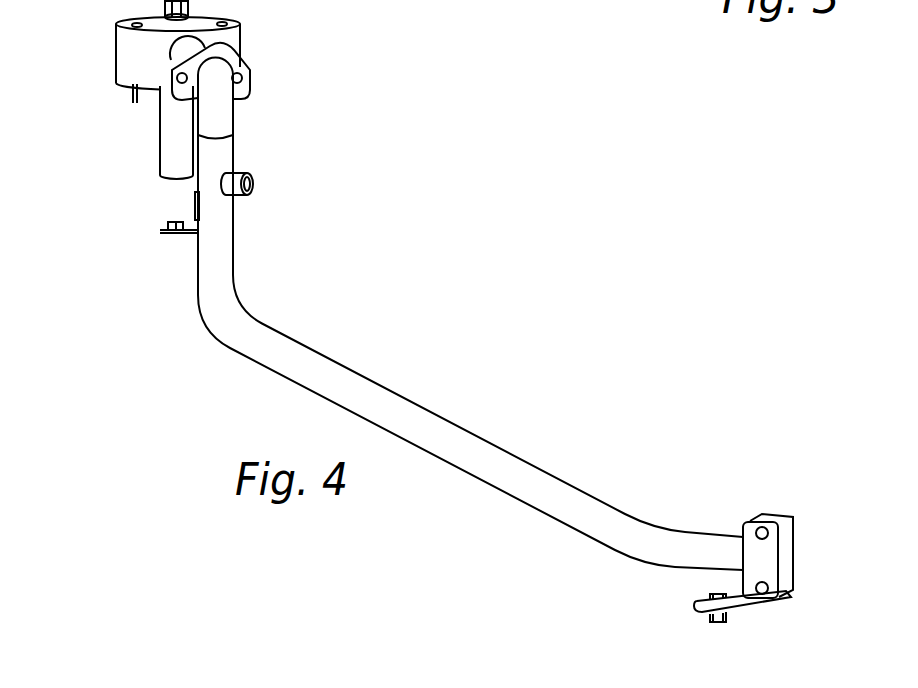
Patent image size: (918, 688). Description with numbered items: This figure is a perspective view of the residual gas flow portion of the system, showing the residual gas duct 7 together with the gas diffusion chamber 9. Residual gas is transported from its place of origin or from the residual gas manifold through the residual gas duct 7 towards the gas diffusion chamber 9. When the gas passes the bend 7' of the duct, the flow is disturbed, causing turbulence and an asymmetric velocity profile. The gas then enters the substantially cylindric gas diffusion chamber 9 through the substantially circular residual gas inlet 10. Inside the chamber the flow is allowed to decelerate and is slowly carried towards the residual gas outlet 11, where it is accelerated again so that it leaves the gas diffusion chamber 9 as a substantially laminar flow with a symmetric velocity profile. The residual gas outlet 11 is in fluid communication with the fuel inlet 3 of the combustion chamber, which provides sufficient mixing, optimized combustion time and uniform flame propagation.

The fuel inlet 3 is at (172, 150).
The residual gas duct 7 is at (470, 335).
The bend 7' is at (259, 126).
The gas diffusion chamber 9 is at (132, 57).
The residual gas inlet 10 is at (188, 44).
The residual gas outlet 11 is at (153, 92).